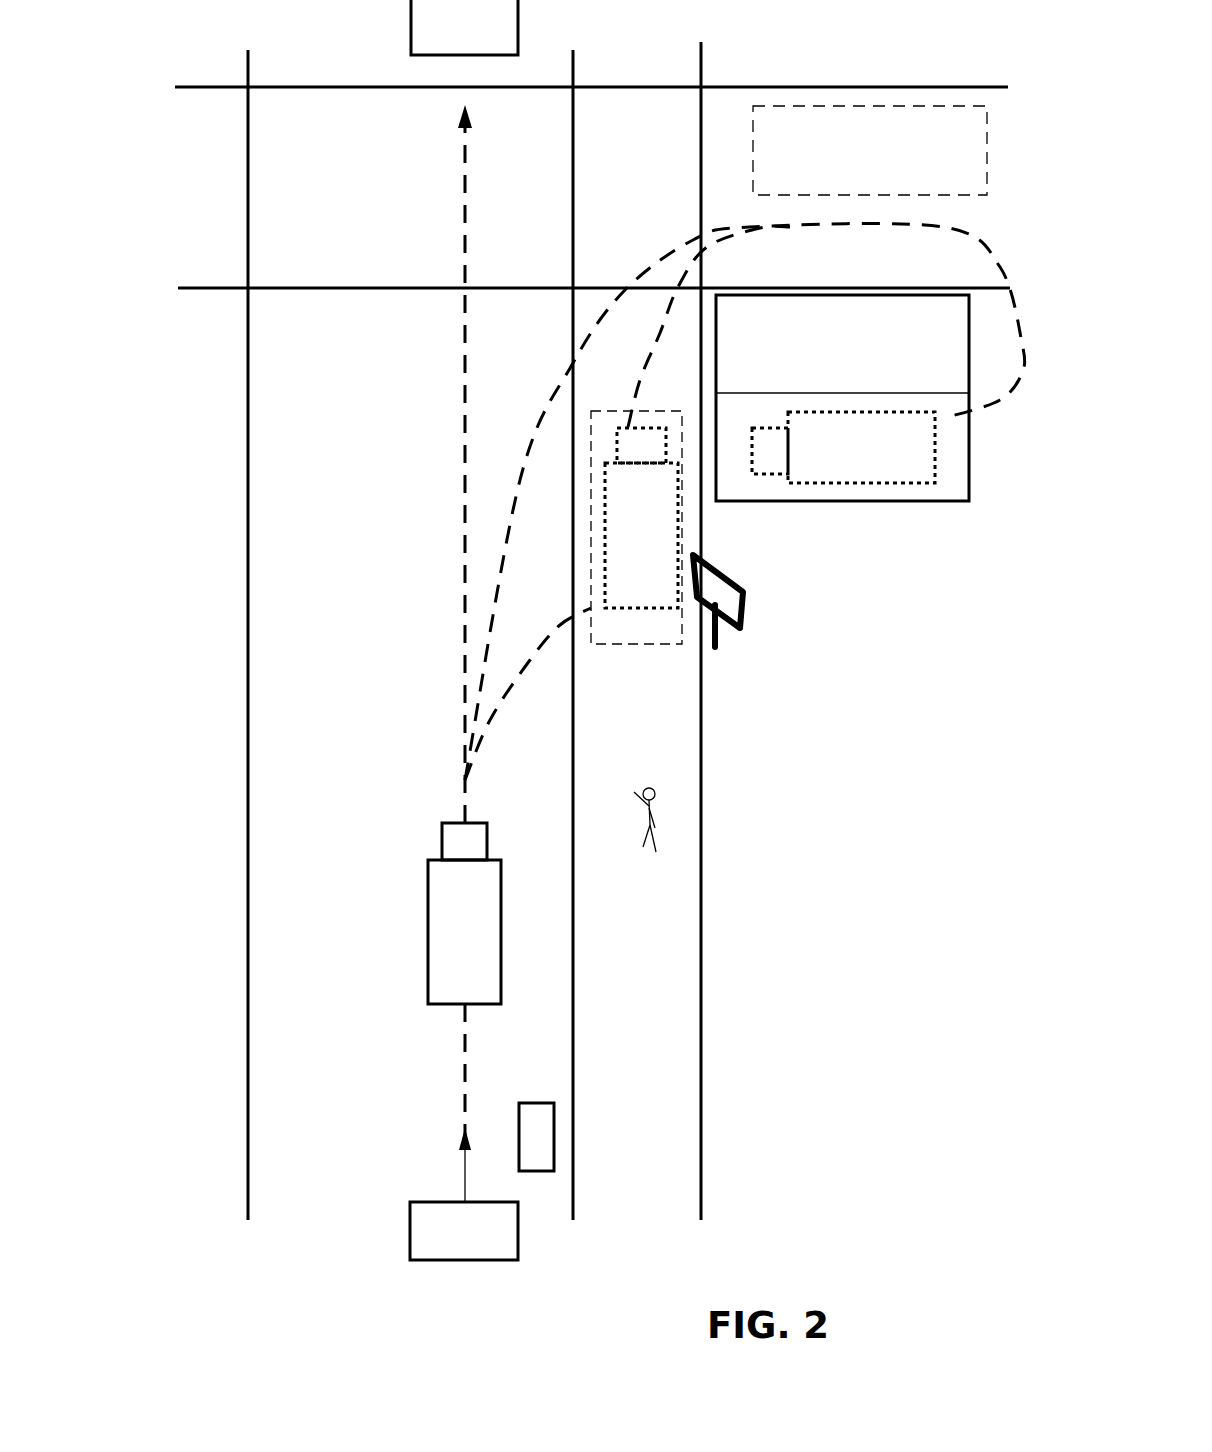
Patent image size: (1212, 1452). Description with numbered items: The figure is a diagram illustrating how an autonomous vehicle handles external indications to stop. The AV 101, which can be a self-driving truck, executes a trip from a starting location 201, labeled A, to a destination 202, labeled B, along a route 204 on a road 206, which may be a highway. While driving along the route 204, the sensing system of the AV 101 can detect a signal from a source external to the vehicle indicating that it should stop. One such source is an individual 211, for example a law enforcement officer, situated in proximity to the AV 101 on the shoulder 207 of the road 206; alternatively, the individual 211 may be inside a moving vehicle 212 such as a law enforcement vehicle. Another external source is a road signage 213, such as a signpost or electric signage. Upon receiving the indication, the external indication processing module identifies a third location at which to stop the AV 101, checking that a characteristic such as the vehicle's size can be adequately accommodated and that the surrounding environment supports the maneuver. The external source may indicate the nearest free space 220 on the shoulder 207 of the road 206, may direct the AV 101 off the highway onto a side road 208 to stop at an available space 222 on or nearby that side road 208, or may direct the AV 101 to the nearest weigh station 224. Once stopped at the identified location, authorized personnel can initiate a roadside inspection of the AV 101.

The autonomous vehicle 101 is at (502, 932).
The starting location 201 is at (518, 1238).
The destination 202 is at (410, 33).
The route 204 is at (463, 537).
The road 206 is at (222, 956).
The shoulder 207 is at (632, 753).
The side road 208 is at (796, 78).
The individual 211 is at (668, 829).
The moving vehicle 212 is at (554, 1128).
The road signage 213 is at (745, 627).
The free space 220 is at (627, 645).
The available space 222 is at (845, 122).
The weigh station 224 is at (789, 502).